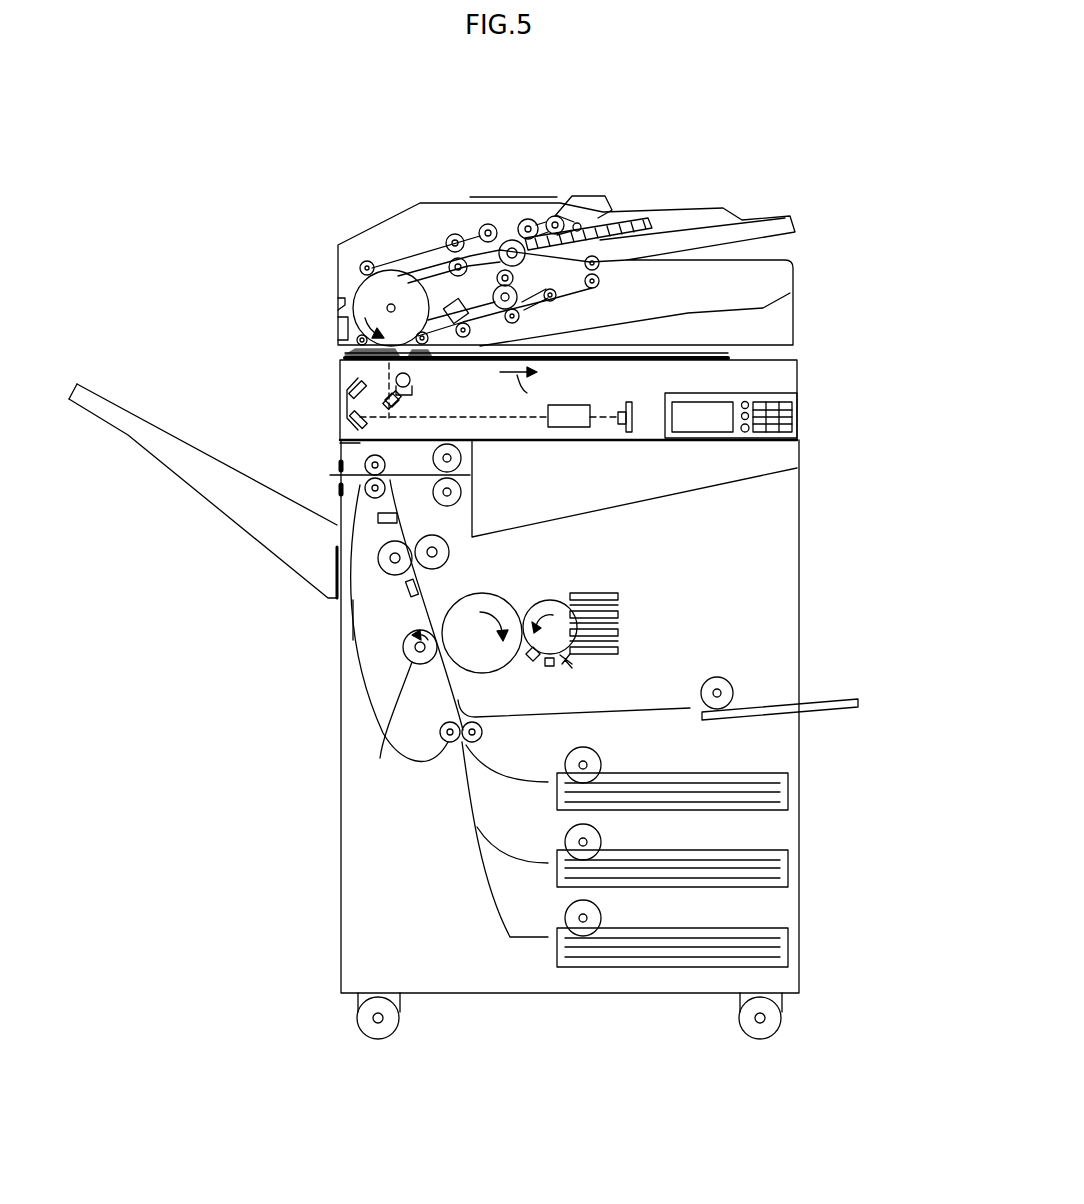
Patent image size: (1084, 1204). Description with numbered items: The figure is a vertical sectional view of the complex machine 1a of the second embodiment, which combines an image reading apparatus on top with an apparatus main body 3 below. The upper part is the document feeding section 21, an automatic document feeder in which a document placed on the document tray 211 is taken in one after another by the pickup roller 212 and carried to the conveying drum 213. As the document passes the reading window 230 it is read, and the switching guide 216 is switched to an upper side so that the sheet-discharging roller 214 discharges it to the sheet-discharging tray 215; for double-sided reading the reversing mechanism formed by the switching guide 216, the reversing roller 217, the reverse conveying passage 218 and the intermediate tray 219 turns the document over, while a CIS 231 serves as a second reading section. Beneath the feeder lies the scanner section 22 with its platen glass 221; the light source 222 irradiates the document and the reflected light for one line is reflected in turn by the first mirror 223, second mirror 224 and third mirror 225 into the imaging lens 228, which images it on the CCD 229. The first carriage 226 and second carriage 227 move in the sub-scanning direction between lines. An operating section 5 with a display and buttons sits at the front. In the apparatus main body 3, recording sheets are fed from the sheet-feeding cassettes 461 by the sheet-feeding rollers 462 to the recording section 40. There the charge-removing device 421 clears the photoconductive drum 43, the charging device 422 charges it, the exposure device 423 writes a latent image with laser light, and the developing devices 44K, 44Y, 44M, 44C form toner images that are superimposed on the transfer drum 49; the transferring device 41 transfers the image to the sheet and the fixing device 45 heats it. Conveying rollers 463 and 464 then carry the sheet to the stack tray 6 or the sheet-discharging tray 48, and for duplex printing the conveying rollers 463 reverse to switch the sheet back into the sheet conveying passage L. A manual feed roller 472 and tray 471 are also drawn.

The complex machine 1a is at (283, 212).
The document feeding section 21 is at (798, 322).
The document tray 211 is at (675, 233).
The pickup roller 212 is at (558, 221).
The intermediate tray 219 is at (621, 262).
The reverse conveying passage 218 is at (440, 275).
The CIS 231 is at (443, 316).
The conveying drum 213 is at (366, 290).
The reading window 230 is at (362, 352).
The sheet-discharging roller 214 is at (517, 325).
The switching guide 216 is at (553, 303).
The reversing roller 217 is at (605, 278).
The sheet-discharging tray 215 is at (688, 313).
The scanner section 22 is at (798, 362).
The platen glass 221 is at (558, 366).
The first carriage 226 is at (412, 378).
The light source 222 is at (408, 386).
The first mirror 223 is at (398, 400).
The second mirror 224 is at (347, 392).
The third mirror 225 is at (347, 418).
The second carriage 227 is at (358, 445).
The imaging lens 228 is at (556, 430).
The CCD 229 is at (620, 430).
The operating section 5 is at (750, 441).
The apparatus main body 3 is at (776, 584).
The sheet-discharging tray 48 is at (710, 495).
The conveying roller 464 is at (340, 466).
The conveying roller 463 is at (463, 457).
The stack tray 6 is at (247, 544).
The recording section 40 is at (386, 636).
The sheet conveying passage L is at (338, 624).
The fixing device 45 is at (395, 570).
The transferring device 41 is at (399, 710).
The transfer drum 49 is at (470, 607).
The photoconductive drum 43 is at (558, 610).
The charge-removing device 421 is at (530, 658).
The charging device 422 is at (549, 668).
The exposure device 423 is at (566, 666).
The developing device 44C is at (620, 597).
The developing device 44M is at (620, 617).
The developing device 44Y is at (620, 635).
The developing device 44K is at (620, 650).
The manual feed roller 472 is at (717, 676).
The manual feed tray 471 is at (843, 700).
The sheet-feeding cassette 461 is at (788, 950).
The sheet-feeding roller 462 is at (601, 766).